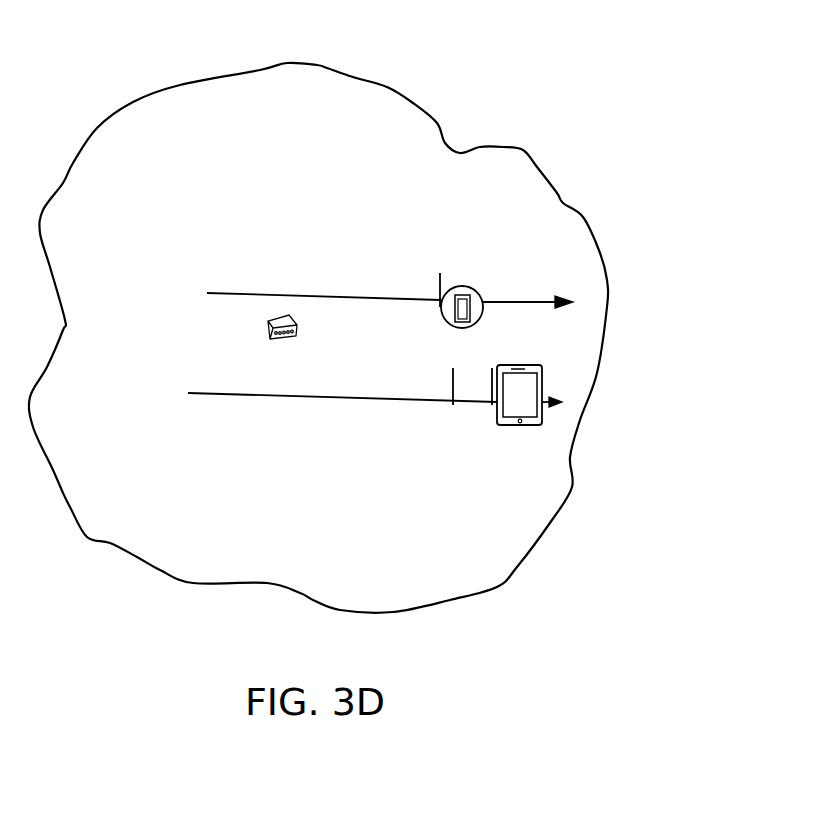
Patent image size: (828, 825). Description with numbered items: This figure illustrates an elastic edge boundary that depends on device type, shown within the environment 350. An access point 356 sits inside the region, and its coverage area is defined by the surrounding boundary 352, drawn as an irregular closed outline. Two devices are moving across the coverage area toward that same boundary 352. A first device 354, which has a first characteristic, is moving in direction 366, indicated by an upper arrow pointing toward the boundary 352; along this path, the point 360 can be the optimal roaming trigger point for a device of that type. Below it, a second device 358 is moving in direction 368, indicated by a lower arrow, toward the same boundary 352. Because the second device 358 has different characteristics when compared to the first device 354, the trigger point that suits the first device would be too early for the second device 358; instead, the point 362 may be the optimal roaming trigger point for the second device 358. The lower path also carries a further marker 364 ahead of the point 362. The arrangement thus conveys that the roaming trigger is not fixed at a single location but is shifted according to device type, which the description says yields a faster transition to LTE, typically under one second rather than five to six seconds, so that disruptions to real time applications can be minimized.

The environment 350 is at (541, 59).
The coverage area boundary 352 is at (604, 287).
The first device 354 is at (460, 288).
The AP2 356 is at (266, 330).
The second device 358 is at (543, 387).
The roaming trigger point 360 is at (438, 280).
The roaming trigger point 362 is at (491, 395).
The third position marker 364 is at (451, 383).
The direction 366 is at (533, 300).
The direction 368 is at (283, 398).